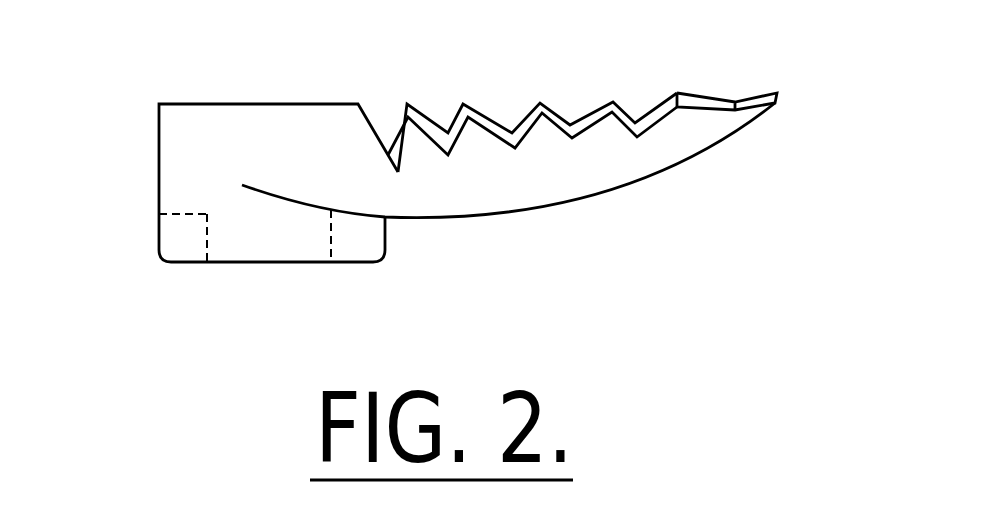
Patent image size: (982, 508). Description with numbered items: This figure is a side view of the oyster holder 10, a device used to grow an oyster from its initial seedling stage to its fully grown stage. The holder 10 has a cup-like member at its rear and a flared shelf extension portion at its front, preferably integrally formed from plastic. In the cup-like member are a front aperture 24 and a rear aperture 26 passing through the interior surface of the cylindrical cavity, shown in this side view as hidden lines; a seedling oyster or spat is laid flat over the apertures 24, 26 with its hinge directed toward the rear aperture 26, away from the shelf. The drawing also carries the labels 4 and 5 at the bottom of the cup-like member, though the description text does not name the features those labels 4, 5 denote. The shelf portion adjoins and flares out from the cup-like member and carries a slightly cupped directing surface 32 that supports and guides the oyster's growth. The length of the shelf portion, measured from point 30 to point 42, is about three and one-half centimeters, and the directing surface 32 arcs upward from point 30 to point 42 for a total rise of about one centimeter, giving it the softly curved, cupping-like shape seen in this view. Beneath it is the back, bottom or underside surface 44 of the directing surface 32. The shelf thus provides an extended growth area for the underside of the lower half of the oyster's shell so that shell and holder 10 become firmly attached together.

The oyster holder 10 is at (592, 90).
The point 42 is at (778, 92).
The underside surface 44 is at (629, 157).
The directing surface 32 is at (505, 110).
The point 30 is at (387, 219).
The shank bottom 5 is at (300, 237).
The front aperture 24 is at (357, 243).
The mounting portion 4 is at (207, 226).
The rear aperture 26 is at (176, 237).